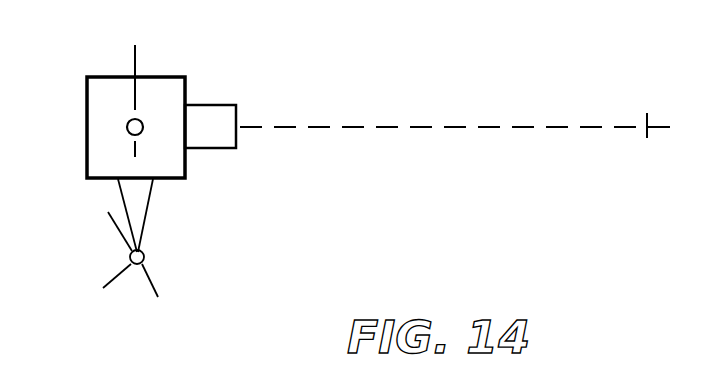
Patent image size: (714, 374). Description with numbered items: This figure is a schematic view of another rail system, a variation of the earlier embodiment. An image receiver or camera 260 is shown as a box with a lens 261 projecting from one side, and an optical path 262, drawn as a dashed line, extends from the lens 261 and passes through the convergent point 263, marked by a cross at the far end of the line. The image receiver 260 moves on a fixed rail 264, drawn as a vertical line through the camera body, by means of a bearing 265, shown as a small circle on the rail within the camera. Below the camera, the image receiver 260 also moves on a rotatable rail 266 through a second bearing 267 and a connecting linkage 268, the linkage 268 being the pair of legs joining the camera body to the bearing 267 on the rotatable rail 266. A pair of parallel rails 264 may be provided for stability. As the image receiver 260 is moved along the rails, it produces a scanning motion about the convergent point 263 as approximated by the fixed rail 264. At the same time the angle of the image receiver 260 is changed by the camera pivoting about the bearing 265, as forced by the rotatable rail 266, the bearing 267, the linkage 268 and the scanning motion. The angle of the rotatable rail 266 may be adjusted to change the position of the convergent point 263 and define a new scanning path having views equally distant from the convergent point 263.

The image receiver 260 is at (177, 77).
The lens 261 is at (230, 105).
The optical path 262 is at (393, 125).
The convergent point 263 is at (646, 126).
The fixed rail 264 is at (138, 60).
The bearing 265 is at (127, 128).
The rotatable rail 266 is at (152, 282).
The bearing 267 is at (107, 265).
The connecting linkage 268 is at (150, 202).